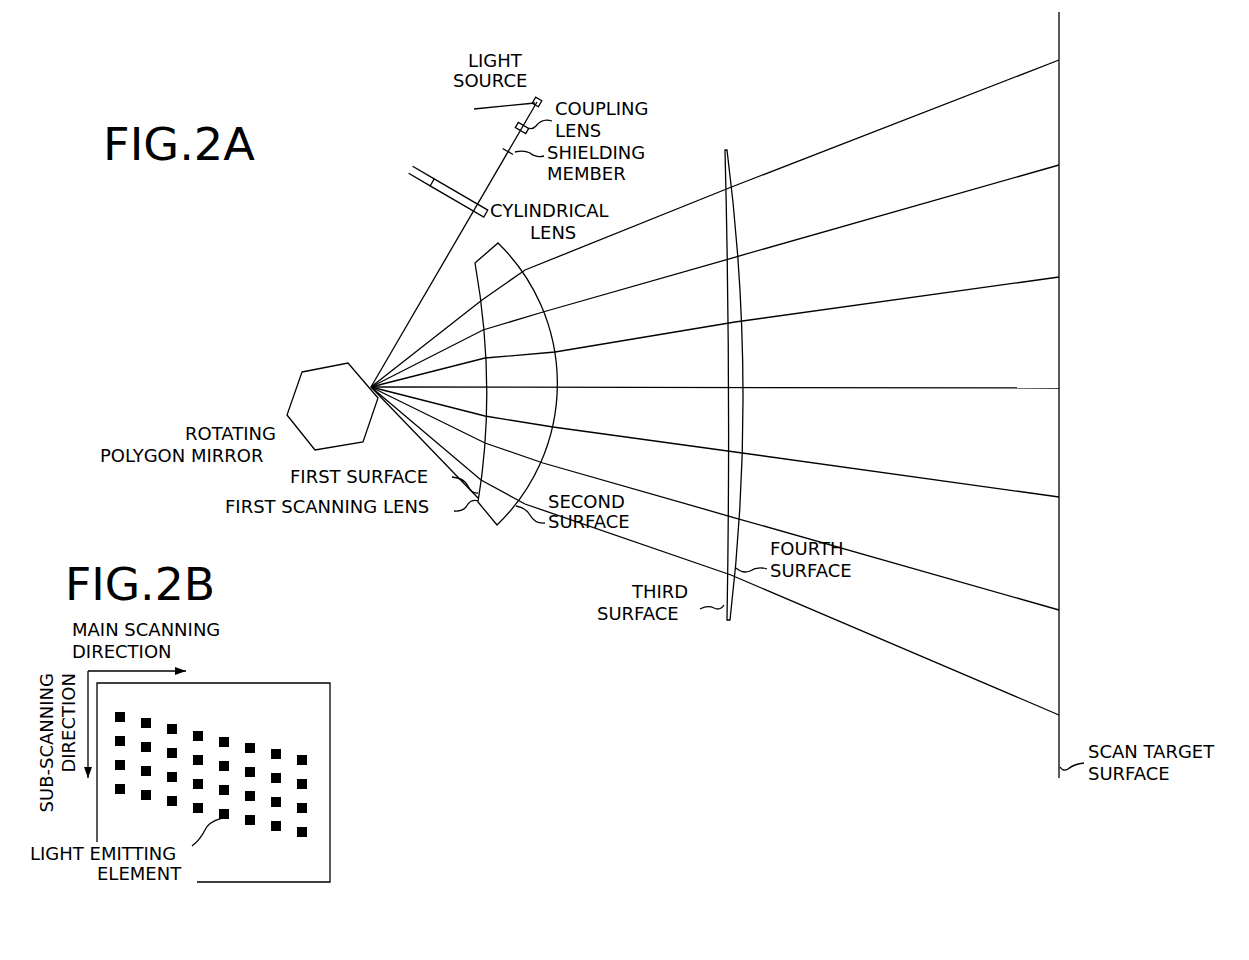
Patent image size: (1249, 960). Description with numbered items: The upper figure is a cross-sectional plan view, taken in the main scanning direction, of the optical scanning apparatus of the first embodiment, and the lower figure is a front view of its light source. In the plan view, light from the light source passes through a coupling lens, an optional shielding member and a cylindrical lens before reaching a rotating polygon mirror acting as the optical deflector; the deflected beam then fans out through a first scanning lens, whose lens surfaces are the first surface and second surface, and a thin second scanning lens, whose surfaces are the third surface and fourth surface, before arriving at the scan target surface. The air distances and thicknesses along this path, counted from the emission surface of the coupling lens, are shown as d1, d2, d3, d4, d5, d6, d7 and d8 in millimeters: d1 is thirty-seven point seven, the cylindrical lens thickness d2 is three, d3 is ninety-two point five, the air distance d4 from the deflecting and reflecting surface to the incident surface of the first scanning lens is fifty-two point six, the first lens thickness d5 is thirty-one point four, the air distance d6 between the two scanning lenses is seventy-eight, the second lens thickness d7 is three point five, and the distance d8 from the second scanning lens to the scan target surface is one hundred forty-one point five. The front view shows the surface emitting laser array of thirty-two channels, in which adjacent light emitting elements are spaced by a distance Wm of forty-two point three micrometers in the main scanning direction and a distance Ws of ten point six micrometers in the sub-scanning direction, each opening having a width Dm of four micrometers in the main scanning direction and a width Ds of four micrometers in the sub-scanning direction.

In FIG. 2A, the air distance d1 is at (483, 115).
In FIG. 2A, the thickness d2 is at (398, 165).
In FIG. 2A, the air distance d3 is at (434, 188).
In FIG. 2A, the air distance d4 is at (486, 573).
In FIG. 2A, the thickness d5 is at (557, 648).
In FIG. 2A, the air distance d6 is at (729, 632).
In FIG. 2A, the thickness d7 is at (739, 672).
In FIG. 2A, the distance d8 is at (1059, 728).
In FIG. 2B, the distance between adjacent light emitting elements in the main scanning direction Wm is at (297, 750).
In FIG. 2B, the distance between adjacent light emitting elements in the sub-scanning direction Ws is at (272, 757).
In FIG. 2B, the width of opening of light emitting element in the sub-scanning direction Ds is at (297, 825).
In FIG. 2B, the width of opening of light emitting element in the main scanning direction Dm is at (307, 825).